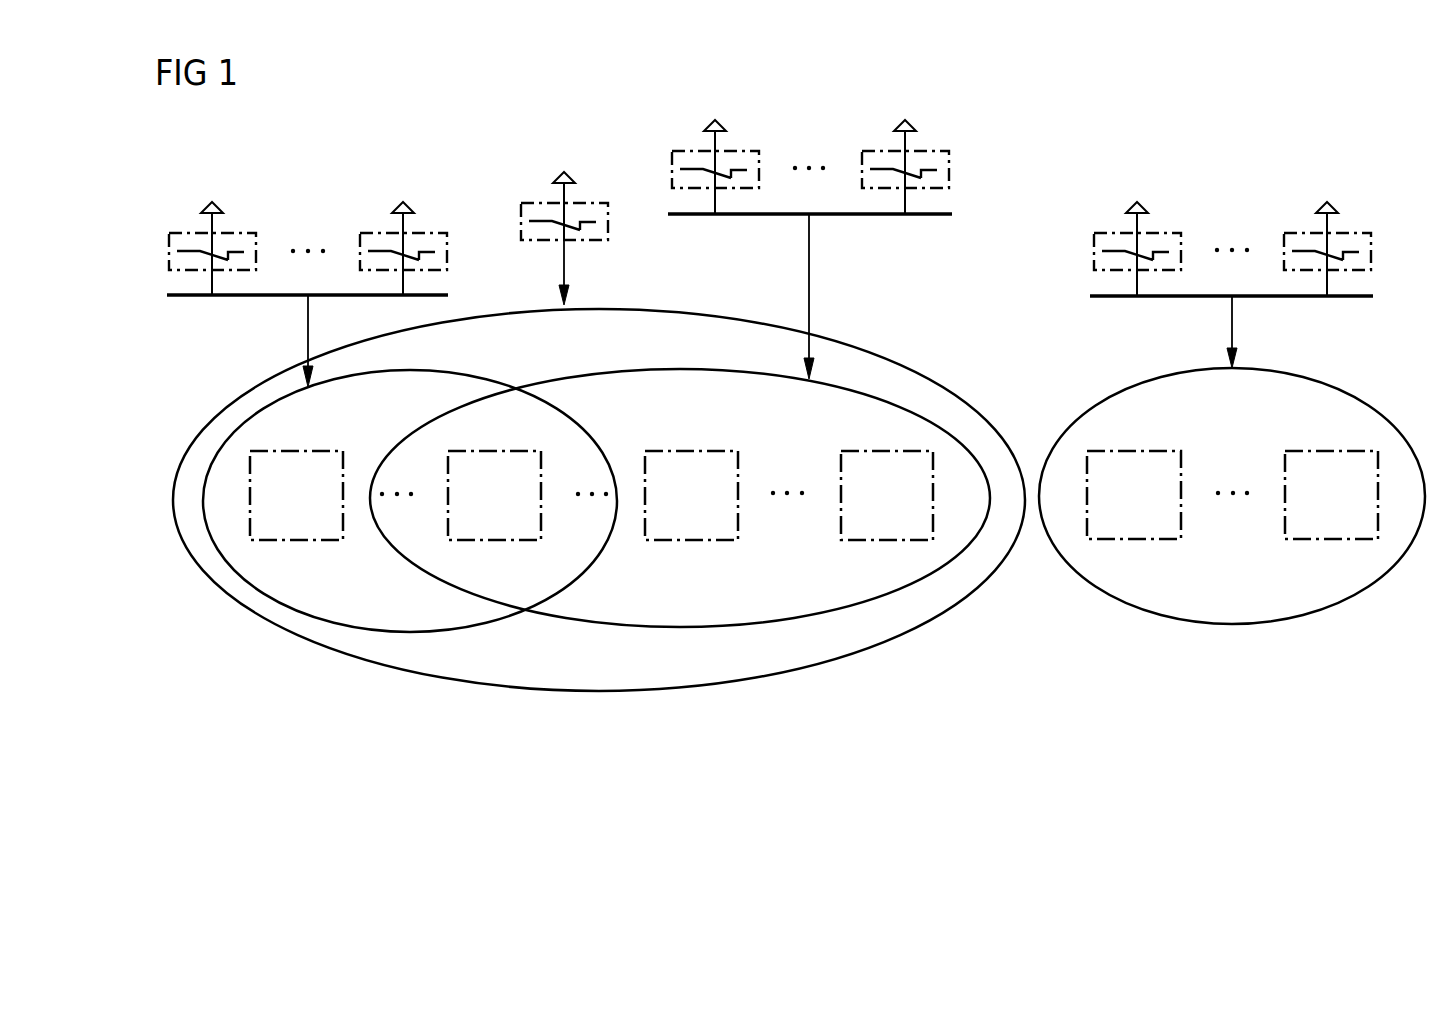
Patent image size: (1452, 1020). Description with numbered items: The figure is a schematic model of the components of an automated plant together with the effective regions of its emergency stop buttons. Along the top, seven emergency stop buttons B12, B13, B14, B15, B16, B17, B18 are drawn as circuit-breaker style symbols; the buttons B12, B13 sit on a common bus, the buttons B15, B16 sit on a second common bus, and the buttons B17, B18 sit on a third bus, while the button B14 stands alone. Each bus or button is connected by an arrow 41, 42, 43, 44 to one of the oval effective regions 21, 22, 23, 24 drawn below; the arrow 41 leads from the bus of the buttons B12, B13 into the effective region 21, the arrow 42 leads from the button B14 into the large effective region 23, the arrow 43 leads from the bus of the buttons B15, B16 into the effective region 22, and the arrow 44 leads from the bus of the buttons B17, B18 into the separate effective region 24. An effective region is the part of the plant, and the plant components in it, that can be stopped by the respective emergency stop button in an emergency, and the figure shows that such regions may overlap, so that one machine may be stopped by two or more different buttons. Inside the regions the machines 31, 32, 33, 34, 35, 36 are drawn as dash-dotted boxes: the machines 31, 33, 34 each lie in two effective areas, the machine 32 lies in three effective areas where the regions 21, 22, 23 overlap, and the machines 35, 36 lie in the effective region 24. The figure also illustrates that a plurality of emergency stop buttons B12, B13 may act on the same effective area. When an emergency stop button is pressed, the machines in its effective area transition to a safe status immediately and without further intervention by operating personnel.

The emergency stop button B12 is at (183, 232).
The emergency stop button B13 is at (375, 232).
The emergency stop button B14 is at (535, 202).
The emergency stop button B15 is at (688, 150).
The emergency stop button B16 is at (878, 150).
The emergency stop button B17 is at (1110, 232).
The emergency stop button B18 is at (1302, 232).
The effective region 21 is at (470, 375).
The effective region 22 is at (599, 374).
The effective region 23 is at (690, 312).
The effective region 24 is at (1115, 394).
The machine 31 is at (310, 450).
The machine 32 is at (507, 450).
The machine 33 is at (703, 450).
The machine 34 is at (840, 470).
The machine 35 is at (1143, 450).
The machine 36 is at (1298, 450).
The feed line 41 is at (307, 331).
The feed line 42 is at (565, 262).
The feed line 43 is at (811, 281).
The feed line 44 is at (1230, 322).